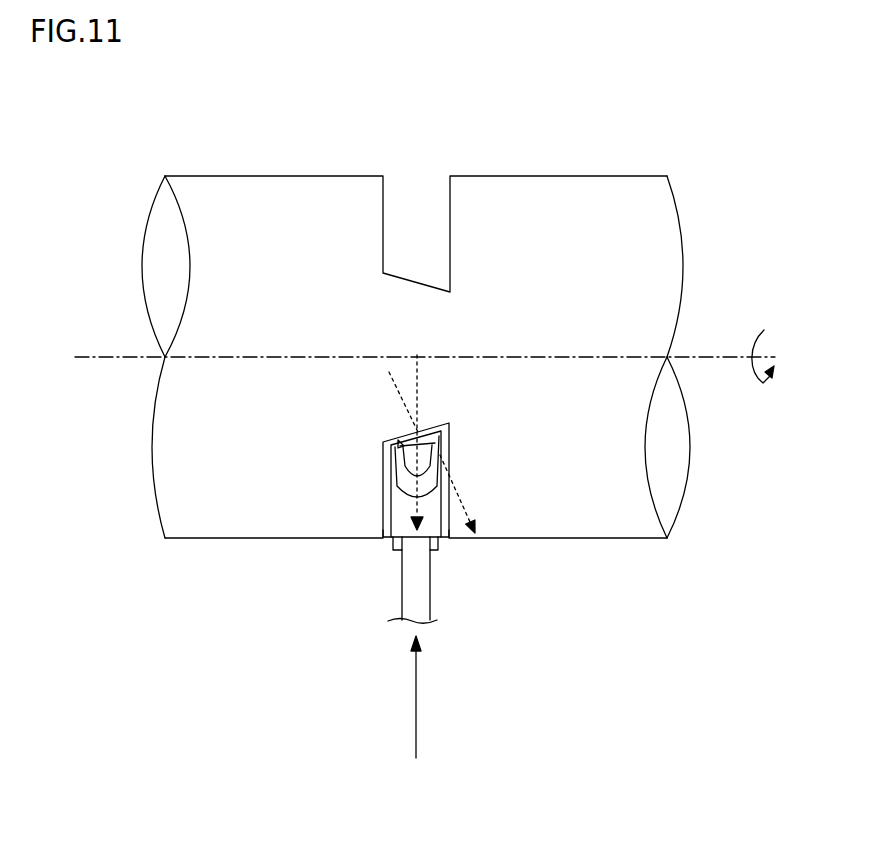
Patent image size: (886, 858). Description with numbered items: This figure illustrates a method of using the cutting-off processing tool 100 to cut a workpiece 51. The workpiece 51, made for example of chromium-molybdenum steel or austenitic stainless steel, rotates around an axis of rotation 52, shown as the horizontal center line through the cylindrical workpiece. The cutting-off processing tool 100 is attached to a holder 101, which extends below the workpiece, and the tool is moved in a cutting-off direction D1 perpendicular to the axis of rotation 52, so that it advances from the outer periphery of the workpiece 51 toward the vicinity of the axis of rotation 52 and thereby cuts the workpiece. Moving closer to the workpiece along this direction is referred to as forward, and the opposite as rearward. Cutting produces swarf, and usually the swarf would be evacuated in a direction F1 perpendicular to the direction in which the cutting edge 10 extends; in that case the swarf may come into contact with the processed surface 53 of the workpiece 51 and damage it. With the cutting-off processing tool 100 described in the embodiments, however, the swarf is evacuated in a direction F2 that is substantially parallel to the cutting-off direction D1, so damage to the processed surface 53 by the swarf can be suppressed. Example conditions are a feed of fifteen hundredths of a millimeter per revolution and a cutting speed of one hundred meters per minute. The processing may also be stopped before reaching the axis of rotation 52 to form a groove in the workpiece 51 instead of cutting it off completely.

The cutting edge 10 is at (393, 442).
The workpiece 51 is at (604, 187).
The axis of rotation 52 is at (686, 358).
The processed surface 53 is at (452, 535).
The cutting-off processing tool 100 is at (448, 528).
The holder 101 is at (402, 606).
The direction F1 is at (456, 501).
The direction F2 is at (458, 535).
The cutting-off direction D1 is at (417, 709).